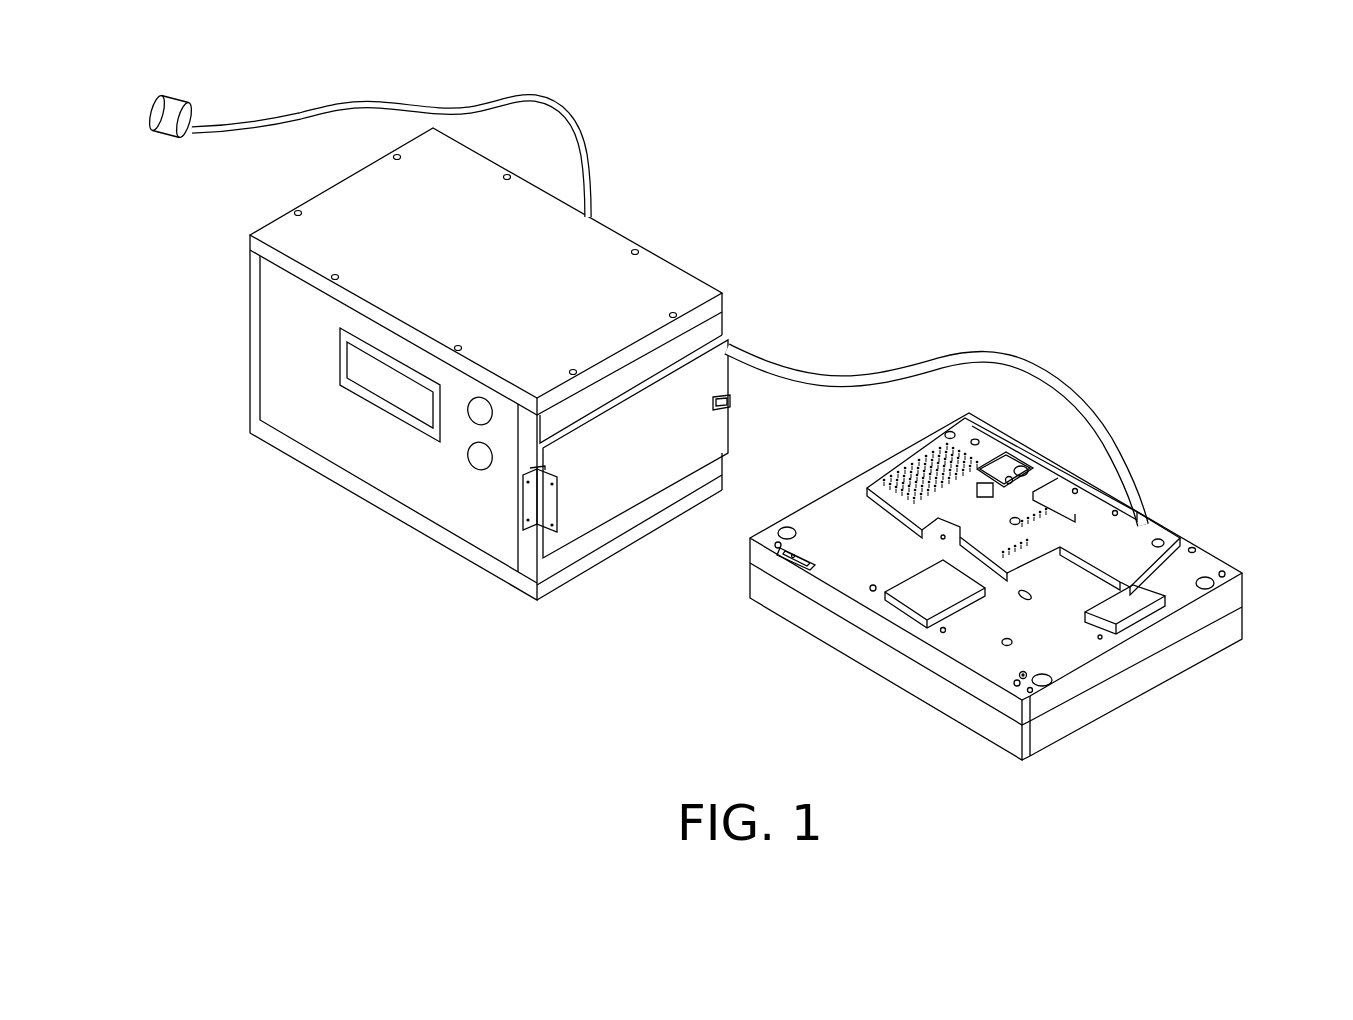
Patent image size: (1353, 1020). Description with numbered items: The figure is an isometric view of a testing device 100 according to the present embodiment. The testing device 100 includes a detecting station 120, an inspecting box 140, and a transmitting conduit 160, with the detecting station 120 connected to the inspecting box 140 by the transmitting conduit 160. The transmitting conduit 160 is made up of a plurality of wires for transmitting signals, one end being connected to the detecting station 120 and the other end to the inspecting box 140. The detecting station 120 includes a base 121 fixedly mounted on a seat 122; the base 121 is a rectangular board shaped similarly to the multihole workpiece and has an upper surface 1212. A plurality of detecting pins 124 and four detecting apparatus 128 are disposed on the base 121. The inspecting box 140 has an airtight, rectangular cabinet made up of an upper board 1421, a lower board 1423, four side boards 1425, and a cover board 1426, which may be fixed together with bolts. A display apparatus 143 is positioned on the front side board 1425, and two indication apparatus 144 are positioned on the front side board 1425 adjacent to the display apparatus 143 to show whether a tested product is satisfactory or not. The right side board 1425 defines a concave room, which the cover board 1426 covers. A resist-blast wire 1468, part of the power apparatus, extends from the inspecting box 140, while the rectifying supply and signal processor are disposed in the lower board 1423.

The testing device 100 is at (778, 106).
The inspecting box 140 is at (637, 213).
The resist-blast wire 1468 is at (349, 103).
The transmitting conduit 160 is at (847, 377).
The detecting station 120 is at (1022, 588).
The base 121 is at (1232, 597).
The seat 122 is at (1193, 655).
The upper surface 1212 is at (985, 655).
The detecting pins 124 is at (912, 468).
The detecting apparatus 128 is at (975, 439).
The display apparatus 143 is at (380, 383).
The indication apparatus 144 is at (473, 458).
The upper board 1421 is at (530, 358).
The lower board 1423 is at (465, 550).
The side boards 1425 is at (572, 555).
The cover board 1426 is at (636, 462).